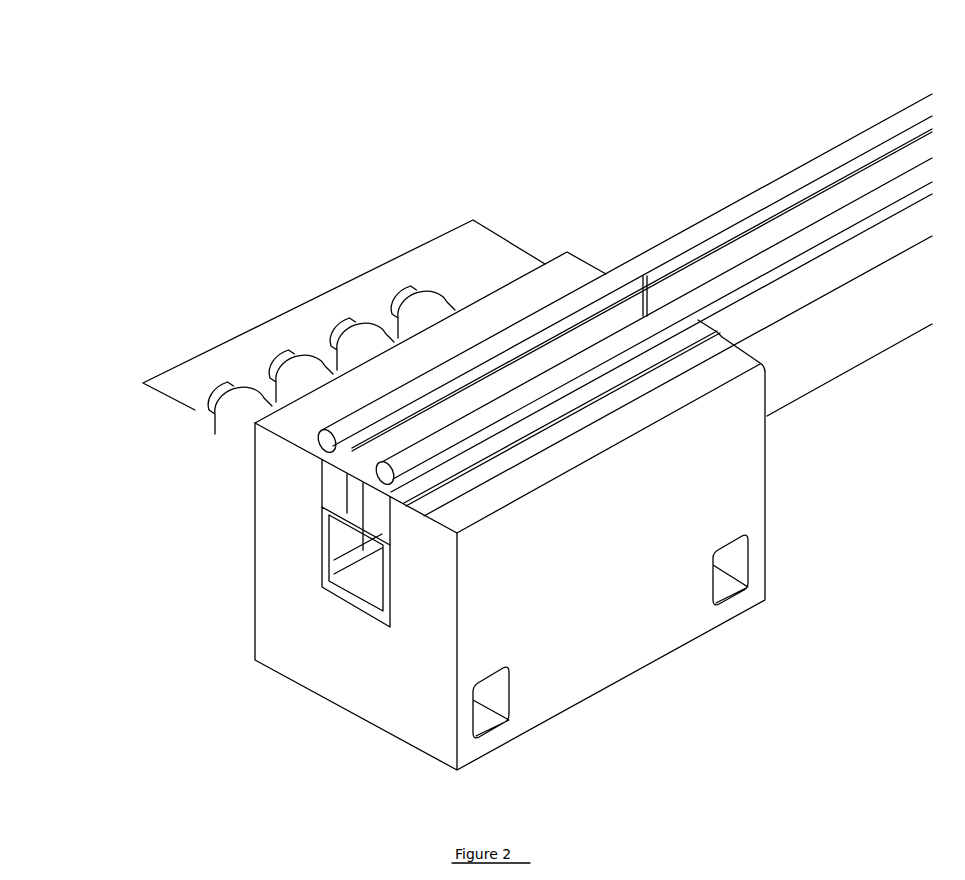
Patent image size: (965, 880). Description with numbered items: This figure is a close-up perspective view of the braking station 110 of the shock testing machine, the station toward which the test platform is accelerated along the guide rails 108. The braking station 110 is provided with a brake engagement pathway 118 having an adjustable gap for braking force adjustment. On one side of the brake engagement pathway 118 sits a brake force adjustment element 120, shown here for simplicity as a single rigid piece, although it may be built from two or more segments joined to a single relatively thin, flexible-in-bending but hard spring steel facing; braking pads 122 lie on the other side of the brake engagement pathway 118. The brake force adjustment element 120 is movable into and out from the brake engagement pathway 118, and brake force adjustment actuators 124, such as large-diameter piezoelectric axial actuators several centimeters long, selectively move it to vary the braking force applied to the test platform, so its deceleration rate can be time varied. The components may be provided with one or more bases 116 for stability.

The guide rails 108 is at (863, 178).
The braking station 110 is at (445, 89).
The base 116 is at (666, 676).
The brake engagement pathway 118 is at (328, 578).
The brake force adjustment element 120 is at (310, 487).
The braking pads 122 is at (372, 548).
The brake force adjustment actuators 124 is at (348, 280).